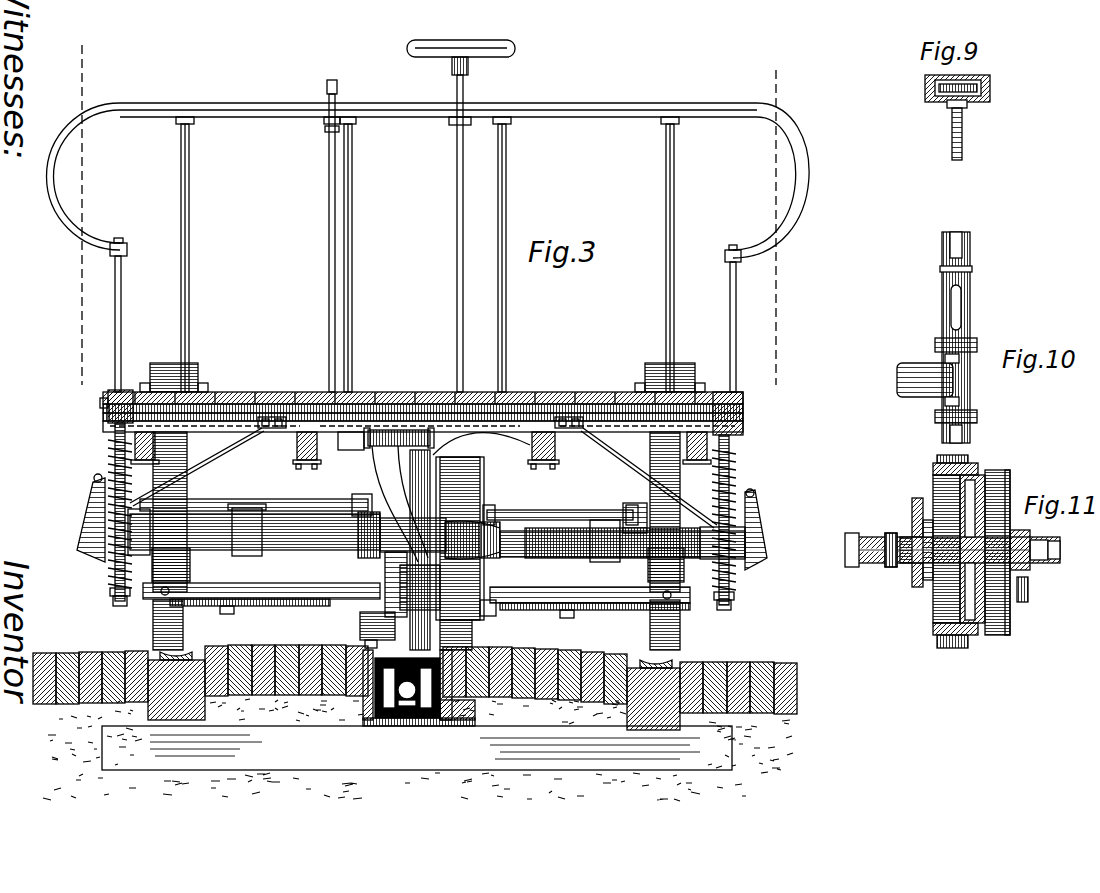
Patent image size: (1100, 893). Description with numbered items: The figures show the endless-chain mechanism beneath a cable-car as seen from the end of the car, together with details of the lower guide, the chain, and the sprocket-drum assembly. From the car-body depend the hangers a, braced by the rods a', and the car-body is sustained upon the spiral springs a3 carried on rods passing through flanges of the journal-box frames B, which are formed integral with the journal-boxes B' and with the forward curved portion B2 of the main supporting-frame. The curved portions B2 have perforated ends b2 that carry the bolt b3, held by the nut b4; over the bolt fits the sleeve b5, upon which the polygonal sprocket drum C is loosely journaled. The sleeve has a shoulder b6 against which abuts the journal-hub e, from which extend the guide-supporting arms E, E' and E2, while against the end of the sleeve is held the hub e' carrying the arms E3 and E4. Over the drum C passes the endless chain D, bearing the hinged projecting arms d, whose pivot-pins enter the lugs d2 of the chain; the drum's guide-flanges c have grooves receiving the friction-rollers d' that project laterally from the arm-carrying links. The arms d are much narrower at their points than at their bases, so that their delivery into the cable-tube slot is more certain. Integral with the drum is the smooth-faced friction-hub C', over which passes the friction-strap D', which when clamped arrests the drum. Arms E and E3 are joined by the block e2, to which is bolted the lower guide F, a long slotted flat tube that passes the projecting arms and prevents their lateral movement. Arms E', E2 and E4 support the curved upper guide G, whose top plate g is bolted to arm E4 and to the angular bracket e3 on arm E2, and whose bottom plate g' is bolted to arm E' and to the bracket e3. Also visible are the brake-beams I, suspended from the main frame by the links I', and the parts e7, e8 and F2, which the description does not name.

In FIG. 3, the hanger a is at (417, 596).
In FIG. 3, the brace rod a' is at (423, 478).
In FIG. 3, the spiral spring a3 is at (110, 446).
In FIG. 3, the journal-box frame B is at (418, 541).
In FIG. 3, the journal-box B' is at (421, 522).
In FIG. 3, the forward curved portion of main supporting-frame B2 is at (250, 548).
In FIG. 11, the sprocket drum C is at (929, 543).
In FIG. 3, the friction-hub C' is at (474, 538).
In FIG. 11, the friction-hub C' is at (996, 544).
In FIG. 9, the projecting arm d is at (967, 130).
In FIG. 10, the projecting arm d is at (909, 379).
In FIG. 10, the friction-roller d' is at (970, 368).
In FIG. 10, the lug of the chain d2 is at (945, 358).
In FIG. 10, the endless chain D is at (969, 337).
In FIG. 3, the friction-strap D' is at (481, 444).
In FIG. 11, the friction-strap D' is at (1007, 537).
In FIG. 11, the journal-hub e is at (914, 557).
In FIG. 11, the hub e' is at (1021, 541).
In FIG. 3, the block e2 is at (500, 615).
In FIG. 3, the angular bracket e3 is at (365, 458).
In FIG. 3, the block e7 is at (360, 622).
In FIG. 3, the bolt e8 is at (368, 642).
In FIG. 3, the guide-supporting arm E is at (374, 584).
In FIG. 11, the guide-supporting arm E is at (900, 579).
In FIG. 3, the guide-supporting arm E' is at (254, 542).
In FIG. 3, the guide-supporting arm E2 is at (360, 500).
In FIG. 11, the guide-supporting arm E2 is at (918, 524).
In FIG. 3, the guide-supporting arm E3 is at (500, 582).
In FIG. 11, the guide-supporting arm E3 is at (1028, 592).
In FIG. 3, the guide-supporting arm E4 is at (500, 528).
In FIG. 3, the lower guide F is at (446, 642).
In FIG. 3, the bracket F2 is at (472, 640).
In FIG. 3, the top plate of upper guide g is at (413, 496).
In FIG. 3, the bottom plate of upper guide g' is at (391, 453).
In FIG. 3, the upper guide G is at (392, 500).
In FIG. 3, the brake-beam I is at (416, 586).
In FIG. 3, the link I' is at (389, 539).
In FIG. 11, the perforated end b2 is at (870, 535).
In FIG. 11, the bolt b3 is at (866, 565).
In FIG. 11, the nut b4 is at (1060, 545).
In FIG. 11, the sleeve b5 is at (928, 586).
In FIG. 11, the shoulder b6 is at (888, 533).
In FIG. 11, the guide-flange c is at (940, 455).